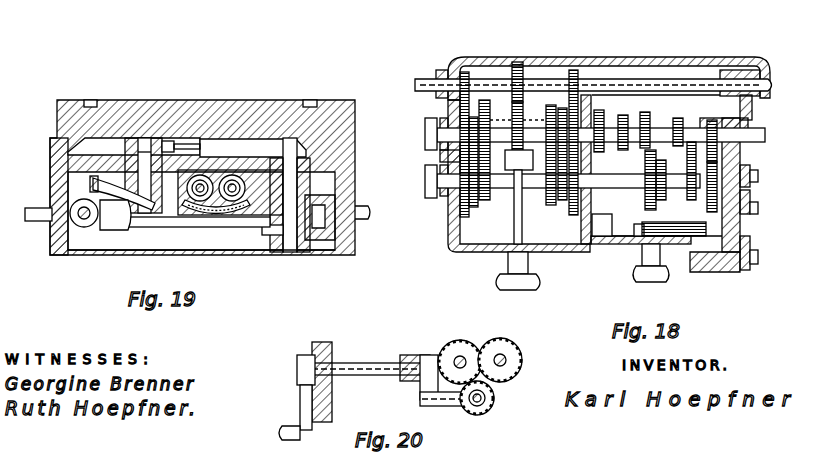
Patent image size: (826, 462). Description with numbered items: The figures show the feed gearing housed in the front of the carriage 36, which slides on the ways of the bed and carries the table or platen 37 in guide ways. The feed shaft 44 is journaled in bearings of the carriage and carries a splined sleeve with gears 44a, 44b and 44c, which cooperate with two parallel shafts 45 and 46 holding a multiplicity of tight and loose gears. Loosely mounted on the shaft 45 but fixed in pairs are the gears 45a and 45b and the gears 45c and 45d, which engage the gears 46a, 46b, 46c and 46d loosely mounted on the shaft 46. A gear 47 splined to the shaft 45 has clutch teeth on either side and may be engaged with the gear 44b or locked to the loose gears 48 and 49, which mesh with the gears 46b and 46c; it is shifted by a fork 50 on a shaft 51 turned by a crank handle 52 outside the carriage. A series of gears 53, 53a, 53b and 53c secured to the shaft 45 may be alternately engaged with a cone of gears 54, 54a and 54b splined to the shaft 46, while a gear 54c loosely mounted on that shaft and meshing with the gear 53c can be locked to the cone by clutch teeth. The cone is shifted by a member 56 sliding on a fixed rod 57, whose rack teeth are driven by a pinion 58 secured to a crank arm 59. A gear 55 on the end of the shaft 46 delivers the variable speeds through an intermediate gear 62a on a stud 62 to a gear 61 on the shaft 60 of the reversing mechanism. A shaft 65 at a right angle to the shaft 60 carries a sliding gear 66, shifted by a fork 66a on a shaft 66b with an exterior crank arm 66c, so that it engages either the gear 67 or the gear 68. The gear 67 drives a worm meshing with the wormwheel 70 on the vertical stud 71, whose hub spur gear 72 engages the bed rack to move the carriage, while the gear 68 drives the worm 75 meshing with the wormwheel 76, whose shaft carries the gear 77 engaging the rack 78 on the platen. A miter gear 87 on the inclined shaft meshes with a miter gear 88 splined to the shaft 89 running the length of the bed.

In FIG. 19, the carriage 36 is at (60, 146).
In FIG. 19, the platen 37 is at (62, 102).
In FIG. 18, the feed shaft 44 is at (415, 87).
In FIG. 18, the gear 44a is at (465, 72).
In FIG. 18, the gear 44b is at (518, 62).
In FIG. 18, the gear 44c is at (573, 70).
In FIG. 18, the shaft 45 is at (423, 135).
In FIG. 18, the gear 45a is at (445, 157).
In FIG. 18, the gear 45b is at (474, 117).
In FIG. 18, the gear 45c is at (562, 108).
In FIG. 18, the gear 45d is at (599, 110).
In FIG. 18, the shaft 46 is at (423, 184).
In FIG. 18, the gear 46a is at (464, 218).
In FIG. 18, the gear 46b is at (485, 210).
In FIG. 18, the gear 46c is at (553, 208).
In FIG. 18, the gear 46d is at (563, 215).
In FIG. 18, the gear 47 is at (512, 112).
In FIG. 18, the gear 48 is at (486, 100).
In FIG. 18, the gear 49 is at (550, 105).
In FIG. 18, the fork 50 is at (508, 170).
In FIG. 18, the shaft 51 is at (522, 220).
In FIG. 18, the crank handle 52 is at (538, 290).
In FIG. 18, the gear 53 is at (622, 115).
In FIG. 18, the gear 53a is at (645, 112).
In FIG. 18, the gear 53b is at (678, 118).
In FIG. 18, the gear 53c is at (712, 120).
In FIG. 18, the cone gear 54 is at (648, 150).
In FIG. 18, the cone gear 54a is at (660, 160).
In FIG. 18, the cone gear 54b is at (691, 142).
In FIG. 18, the gear 54c is at (740, 152).
In FIG. 18, the gear 55 is at (758, 173).
In FIG. 18, the shifting member 56 is at (680, 240).
In FIG. 18, the fixed rod 57 is at (612, 222).
In FIG. 18, the pinion 58 is at (638, 238).
In FIG. 18, the crank arm 59 is at (632, 284).
In FIG. 18, the shaft 60 is at (700, 274).
In FIG. 18, the gear 61 is at (750, 268).
In FIG. 18, the stud 62 is at (758, 215).
In FIG. 18, the intermediate gear 62a is at (750, 202).
In FIG. 20, the shaft 65 is at (495, 390).
In FIG. 20, the gear 66 is at (496, 399).
In FIG. 20, the fork 66a is at (420, 396).
In FIG. 20, the shaft 66b is at (360, 362).
In FIG. 20, the crank arm 66c is at (302, 356).
In FIG. 20, the gear 67 is at (490, 340).
In FIG. 20, the gear 68 is at (445, 345).
In FIG. 19, the wormwheel 70 is at (252, 137).
In FIG. 19, the vertical stud 71 is at (290, 140).
In FIG. 19, the spur gear 72 is at (275, 235).
In FIG. 19, the worm 75 is at (92, 184).
In FIG. 19, the wormwheel 76 is at (146, 145).
In FIG. 19, the gear 77 is at (128, 138).
In FIG. 19, the rack 78 is at (170, 141).
In FIG. 19, the miter gear 87 is at (82, 228).
In FIG. 19, the miter gear 88 is at (106, 232).
In FIG. 19, the shaft 89 is at (40, 222).